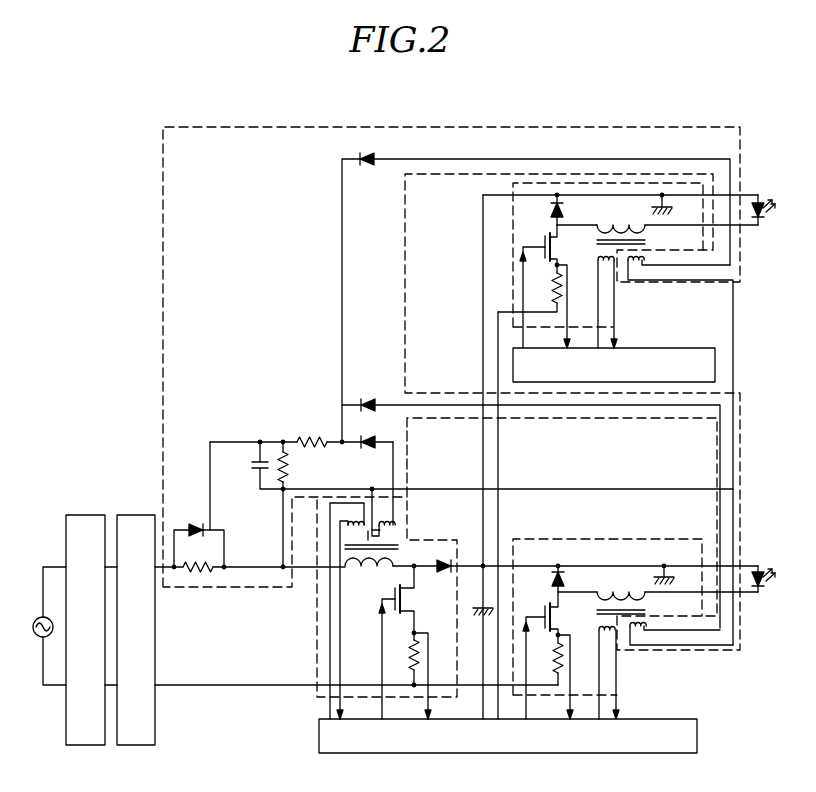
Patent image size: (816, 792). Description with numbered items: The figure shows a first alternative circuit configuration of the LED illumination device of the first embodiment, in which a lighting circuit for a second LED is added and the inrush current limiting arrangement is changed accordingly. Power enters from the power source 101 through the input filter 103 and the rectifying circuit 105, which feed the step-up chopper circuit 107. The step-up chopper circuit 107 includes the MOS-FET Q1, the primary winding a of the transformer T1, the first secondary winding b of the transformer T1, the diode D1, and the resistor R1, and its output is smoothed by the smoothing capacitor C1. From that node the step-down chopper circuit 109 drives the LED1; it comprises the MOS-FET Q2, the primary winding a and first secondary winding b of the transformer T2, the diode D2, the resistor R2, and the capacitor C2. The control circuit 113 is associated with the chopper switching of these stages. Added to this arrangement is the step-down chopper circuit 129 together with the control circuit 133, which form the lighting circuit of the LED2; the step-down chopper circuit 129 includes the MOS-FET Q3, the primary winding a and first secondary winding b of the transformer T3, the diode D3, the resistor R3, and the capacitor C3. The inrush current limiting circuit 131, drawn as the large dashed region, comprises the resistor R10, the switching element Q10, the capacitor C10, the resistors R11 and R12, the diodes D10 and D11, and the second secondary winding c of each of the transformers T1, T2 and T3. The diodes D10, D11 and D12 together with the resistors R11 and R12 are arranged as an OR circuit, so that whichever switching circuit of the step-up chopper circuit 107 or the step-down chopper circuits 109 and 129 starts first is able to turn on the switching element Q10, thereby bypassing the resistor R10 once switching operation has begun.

The power source 101 is at (50, 600).
The input filter 103 is at (86, 515).
The rectifying circuit 105 is at (136, 515).
The step-up chopper circuit 107 is at (407, 580).
The step-down chopper circuit 109 is at (640, 611).
The control circuit 113 is at (319, 736).
The step-down chopper circuit 129 is at (591, 419).
The inrush current limiting circuit 131 is at (163, 440).
The control circuit 133 is at (668, 348).
The switching element Q10 is at (199, 504).
The resistor R10 is at (258, 558).
The capacitor C10 is at (471, 464).
The resistor R11 is at (303, 503).
The resistor R12 is at (344, 432).
The diode D10 is at (364, 432).
The diode D11 is at (531, 504).
The diode D12 is at (536, 288).
The transformer T1 is at (372, 580).
The MOS-FET Q1 is at (411, 641).
The resistor R1 is at (409, 675).
The diode D1 is at (486, 556).
The smoothing capacitor C1 is at (477, 589).
The transformer T2 is at (658, 646).
The MOS-FET Q2 is at (555, 655).
The resistor R2 is at (551, 676).
The diode D2 is at (573, 578).
The capacitor C2 is at (676, 576).
The transformer T3 is at (657, 426).
The MOS-FET Q3 is at (554, 286).
The resistor R3 is at (534, 305).
The diode D3 is at (620, 209).
The capacitor C3 is at (675, 206).
The LED LED1 is at (765, 609).
The LED LED2 is at (765, 239).